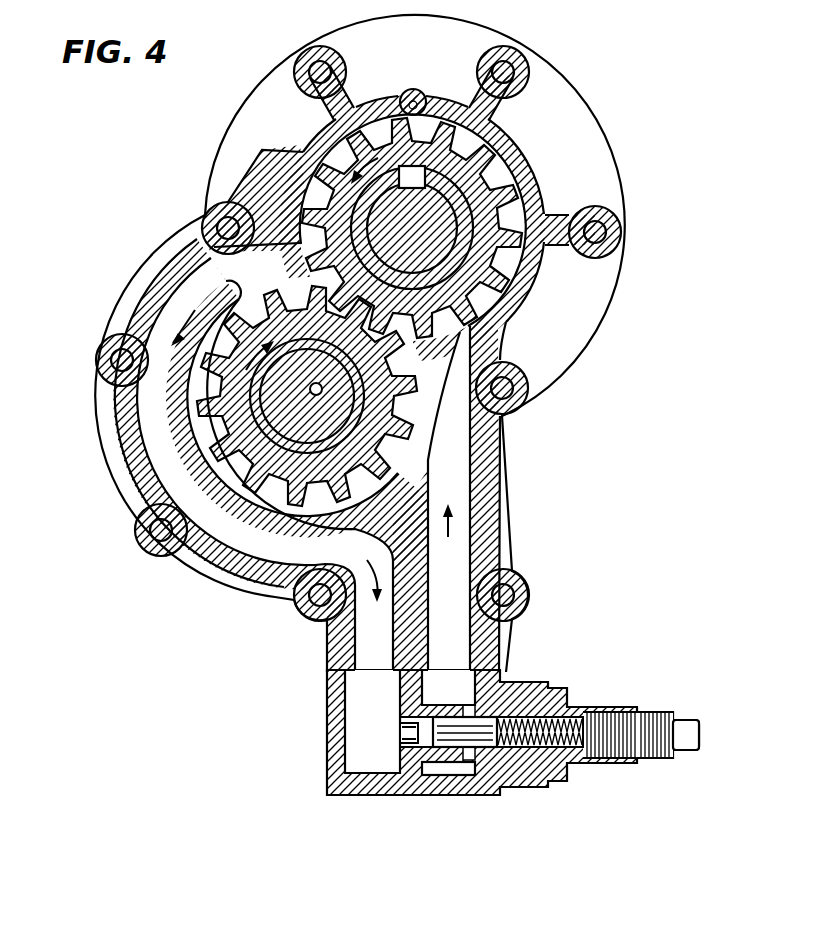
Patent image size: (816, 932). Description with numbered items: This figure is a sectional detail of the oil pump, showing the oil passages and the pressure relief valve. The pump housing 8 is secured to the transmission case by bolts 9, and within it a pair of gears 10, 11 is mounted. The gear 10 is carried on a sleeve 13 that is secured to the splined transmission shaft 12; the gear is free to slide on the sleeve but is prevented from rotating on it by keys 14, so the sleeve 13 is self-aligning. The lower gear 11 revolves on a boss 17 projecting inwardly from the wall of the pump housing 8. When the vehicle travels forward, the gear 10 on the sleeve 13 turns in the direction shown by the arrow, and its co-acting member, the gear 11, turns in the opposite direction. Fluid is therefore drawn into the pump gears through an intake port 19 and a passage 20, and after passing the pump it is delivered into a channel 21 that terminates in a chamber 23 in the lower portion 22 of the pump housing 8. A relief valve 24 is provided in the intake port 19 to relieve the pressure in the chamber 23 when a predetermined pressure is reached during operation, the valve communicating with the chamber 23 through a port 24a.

The pump housing 8 is at (468, 213).
The bolts 9 is at (520, 68).
The gear 10 is at (490, 285).
The gear 11 is at (400, 353).
The transmission shaft 12 is at (423, 207).
The sleeve 13 is at (472, 218).
The keys 14 is at (413, 168).
The boss 17 is at (282, 417).
The intake port 19 is at (447, 767).
The passage 20 is at (457, 447).
The channel 21 is at (207, 298).
The lower portion 22 is at (333, 790).
The chamber 23 is at (362, 698).
The relief valve 24 is at (480, 737).
The port 24a is at (403, 737).